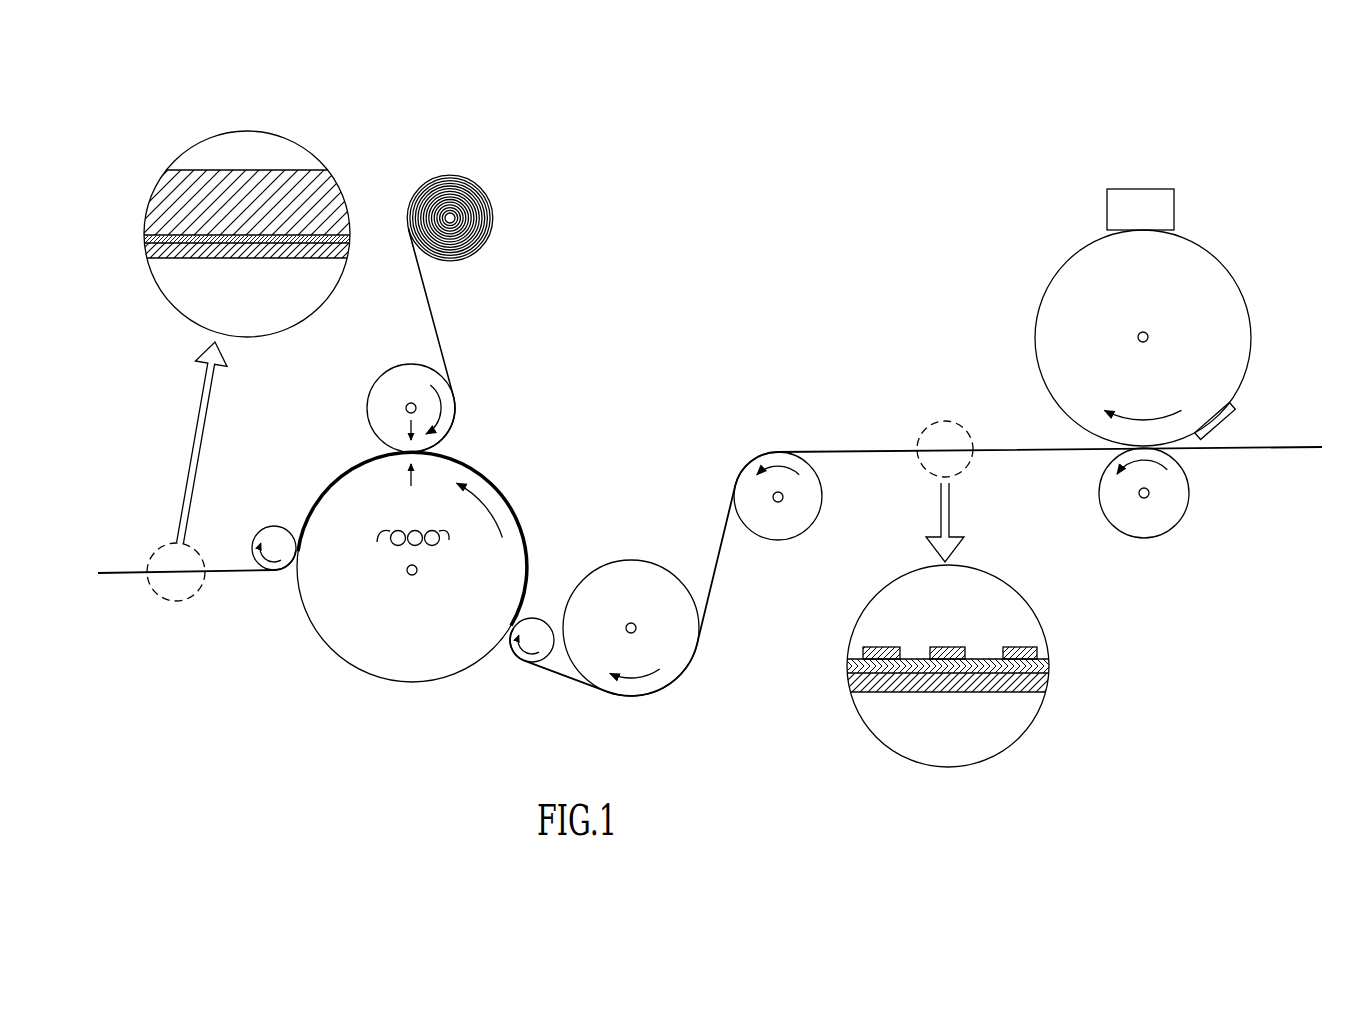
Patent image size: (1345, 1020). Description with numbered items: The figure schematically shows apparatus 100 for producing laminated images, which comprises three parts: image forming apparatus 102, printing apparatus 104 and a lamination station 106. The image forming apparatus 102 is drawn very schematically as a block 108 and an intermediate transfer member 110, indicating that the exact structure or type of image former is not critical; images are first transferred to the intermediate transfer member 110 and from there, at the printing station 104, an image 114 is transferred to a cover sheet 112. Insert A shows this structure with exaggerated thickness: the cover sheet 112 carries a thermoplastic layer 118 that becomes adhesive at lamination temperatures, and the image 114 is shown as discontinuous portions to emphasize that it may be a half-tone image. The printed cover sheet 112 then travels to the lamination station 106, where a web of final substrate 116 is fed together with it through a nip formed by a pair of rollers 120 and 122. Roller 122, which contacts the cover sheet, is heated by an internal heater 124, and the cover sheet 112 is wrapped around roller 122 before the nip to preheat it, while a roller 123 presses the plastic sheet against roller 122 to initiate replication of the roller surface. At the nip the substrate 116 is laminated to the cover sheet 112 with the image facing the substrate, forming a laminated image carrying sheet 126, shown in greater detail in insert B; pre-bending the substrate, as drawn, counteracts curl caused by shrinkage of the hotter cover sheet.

The apparatus for producing laminated images 100 is at (667, 228).
The image forming apparatus 102 is at (965, 255).
The printing apparatus 104 is at (1236, 525).
The lamination station 106 is at (523, 468).
The block 108 is at (1174, 213).
The intermediate transfer member 110 is at (1226, 266).
The cover sheet 112 is at (147, 253).
The image 114 is at (185, 233).
The final substrate 116 is at (333, 198).
The thermoplastic layer 118 is at (145, 238).
The roller 120 is at (390, 368).
The roller 122 is at (298, 590).
The roller 123 is at (532, 628).
The internal heater 124 is at (378, 540).
The laminated image carrying sheet 126 is at (228, 577).
The insert A is at (1012, 745).
The insert B is at (263, 132).